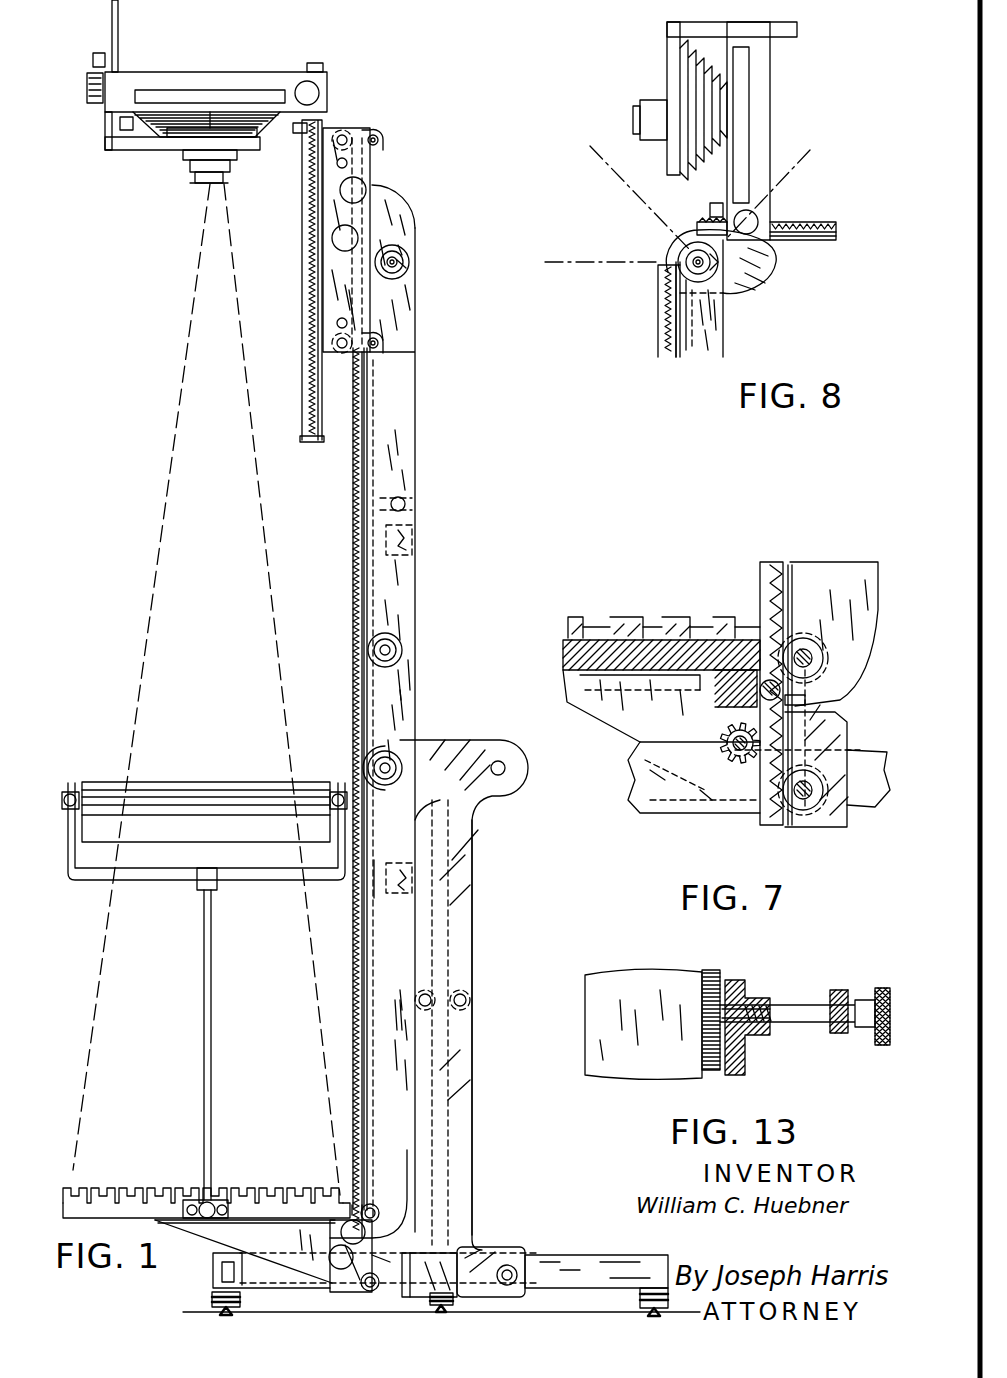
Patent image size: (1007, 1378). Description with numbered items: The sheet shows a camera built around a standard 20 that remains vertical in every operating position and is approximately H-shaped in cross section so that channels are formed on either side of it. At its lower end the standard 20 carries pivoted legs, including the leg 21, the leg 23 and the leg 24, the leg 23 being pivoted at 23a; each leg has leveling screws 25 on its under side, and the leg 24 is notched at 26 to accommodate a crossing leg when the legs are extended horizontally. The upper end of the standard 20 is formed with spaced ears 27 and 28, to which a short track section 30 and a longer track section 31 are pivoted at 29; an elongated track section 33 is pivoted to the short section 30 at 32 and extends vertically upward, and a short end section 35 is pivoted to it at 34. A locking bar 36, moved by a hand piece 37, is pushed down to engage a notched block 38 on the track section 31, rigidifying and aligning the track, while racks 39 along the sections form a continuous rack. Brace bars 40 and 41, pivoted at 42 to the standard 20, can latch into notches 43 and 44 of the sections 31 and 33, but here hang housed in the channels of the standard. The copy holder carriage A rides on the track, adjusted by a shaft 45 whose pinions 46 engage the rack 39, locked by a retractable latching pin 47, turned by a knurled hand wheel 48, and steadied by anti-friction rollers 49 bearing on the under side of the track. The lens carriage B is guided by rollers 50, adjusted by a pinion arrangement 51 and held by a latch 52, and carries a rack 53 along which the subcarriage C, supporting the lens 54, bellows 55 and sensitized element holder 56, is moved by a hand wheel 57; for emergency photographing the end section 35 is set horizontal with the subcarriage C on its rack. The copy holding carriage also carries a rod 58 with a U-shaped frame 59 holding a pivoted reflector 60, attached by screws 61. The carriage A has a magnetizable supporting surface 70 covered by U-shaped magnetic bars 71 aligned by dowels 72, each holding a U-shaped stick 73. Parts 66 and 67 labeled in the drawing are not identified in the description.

In FIG. 1, the standard 20 is at (460, 1048).
In FIG. 1, the leg 21 is at (598, 1268).
In FIG. 7, the leg 21 is at (868, 765).
In FIG. 1, the leg 23 is at (215, 1265).
In FIG. 7, the leg 23 is at (650, 790).
In FIG. 1, the pivot 23a is at (512, 1268).
In FIG. 1, the leg 24 is at (446, 1268).
In FIG. 1, the leveling screws 25 is at (242, 1300).
In FIG. 1, the notch 26 is at (425, 1309).
In FIG. 1, the ear 27 is at (395, 745).
In FIG. 1, the ear 28 is at (505, 758).
In FIG. 1, the pivot 29 is at (395, 760).
In FIG. 1, the short track section 30 is at (405, 688).
In FIG. 1, the track section 31 is at (389, 1030).
In FIG. 7, the track section 31 is at (856, 578).
In FIG. 13, the track section 31 is at (628, 978).
In FIG. 1, the pivot 32 is at (395, 645).
In FIG. 1, the track section 33 is at (396, 446).
In FIG. 8, the track section 33 is at (718, 338).
In FIG. 1, the pivot 34 is at (402, 266).
In FIG. 8, the pivot 34 is at (696, 261).
In FIG. 1, the end section 35 is at (392, 212).
In FIG. 8, the end section 35 is at (755, 274).
In FIG. 1, the locking bar 36 is at (368, 598).
In FIG. 1, the hand piece 37 is at (403, 500).
In FIG. 1, the notched block 38 is at (375, 885).
In FIG. 1, the rack 39 is at (352, 500).
In FIG. 8, the rack 39 is at (822, 224).
In FIG. 7, the rack 39 is at (777, 565).
In FIG. 13, the rack 39 is at (722, 975).
In FIG. 1, the brace bar 40 is at (434, 1072).
In FIG. 1, the brace bar 41 is at (450, 1088).
In FIG. 1, the pivot 42 is at (463, 996).
In FIG. 1, the notch 43 is at (405, 890).
In FIG. 1, the notch 44 is at (410, 537).
In FIG. 7, the shaft 45 is at (728, 760).
In FIG. 7, the pinion 46 is at (732, 752).
In FIG. 1, the latching pin 47 is at (341, 1262).
In FIG. 7, the latching pin 47 is at (795, 698).
In FIG. 13, the latching pin 47 is at (802, 1018).
In FIG. 1, the knurled hand wheel 48 is at (336, 1180).
In FIG. 1, the anti-friction rollers 49 is at (374, 1208).
In FIG. 7, the anti-friction rollers 49 is at (812, 655).
In FIG. 1, the antifriction rollers 50 is at (375, 130).
In FIG. 1, the pinion arrangement 51 is at (352, 232).
In FIG. 1, the latch 52 is at (357, 184).
In FIG. 1, the rack 53 is at (303, 228).
In FIG. 1, the lens 54 is at (230, 172).
In FIG. 1, the bellows 55 is at (162, 148).
In FIG. 1, the sensitized element holder 56 is at (177, 88).
In FIG. 1, the hand wheel 57 is at (309, 90).
In FIG. 1, the rod 58 is at (209, 1027).
In FIG. 1, the U-shaped frame 59 is at (176, 875).
In FIG. 1, the reflector 60 is at (232, 792).
In FIG. 1, the screws 61 is at (190, 1200).
In FIG. 1, the rack backing 66 is at (366, 406).
In FIG. 8, the rack backing 66 is at (822, 236).
In FIG. 7, the rack backing 66 is at (792, 566).
In FIG. 1, the rack end cap 67 is at (320, 441).
In FIG. 1, the supporting surface 70 is at (75, 1211).
In FIG. 7, the supporting surface 70 is at (565, 652).
In FIG. 7, the magnetic bars 71 is at (738, 636).
In FIG. 7, the dowels 72 is at (680, 668).
In FIG. 7, the U-shaped stick 73 is at (700, 630).
In FIG. 1, the copy holder carriage A is at (222, 1234).
In FIG. 7, the copy holder carriage A is at (628, 718).
In FIG. 13, the copy holder carriage A is at (770, 996).
In FIG. 1, the lens carriage B is at (340, 280).
In FIG. 1, the subcarriage C is at (258, 75).
In FIG. 8, the subcarriage C is at (762, 130).